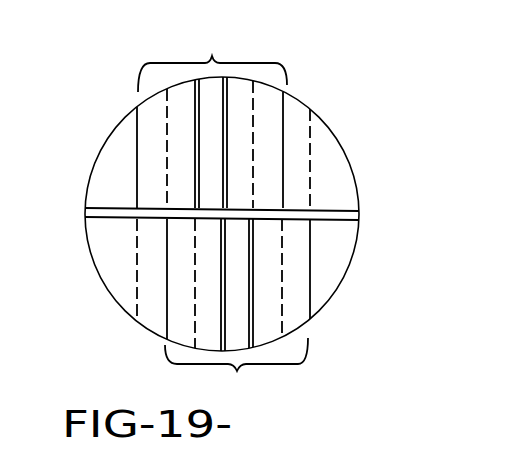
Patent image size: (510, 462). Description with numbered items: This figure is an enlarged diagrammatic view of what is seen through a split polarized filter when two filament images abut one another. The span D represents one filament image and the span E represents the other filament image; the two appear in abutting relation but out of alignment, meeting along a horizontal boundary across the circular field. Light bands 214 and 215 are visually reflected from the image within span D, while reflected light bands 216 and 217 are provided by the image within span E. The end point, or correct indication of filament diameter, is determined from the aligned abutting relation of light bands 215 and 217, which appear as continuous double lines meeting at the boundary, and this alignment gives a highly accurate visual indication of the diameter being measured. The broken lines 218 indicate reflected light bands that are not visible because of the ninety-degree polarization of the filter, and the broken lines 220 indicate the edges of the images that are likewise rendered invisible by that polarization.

The light band 214 is at (198, 93).
The light band 215 is at (226, 106).
The light band 216 is at (253, 310).
The light band 217 is at (223, 335).
The broken lines 218 is at (255, 138).
The broken lines 220 is at (167, 142).
The span D is at (212, 53).
The span E is at (236, 373).